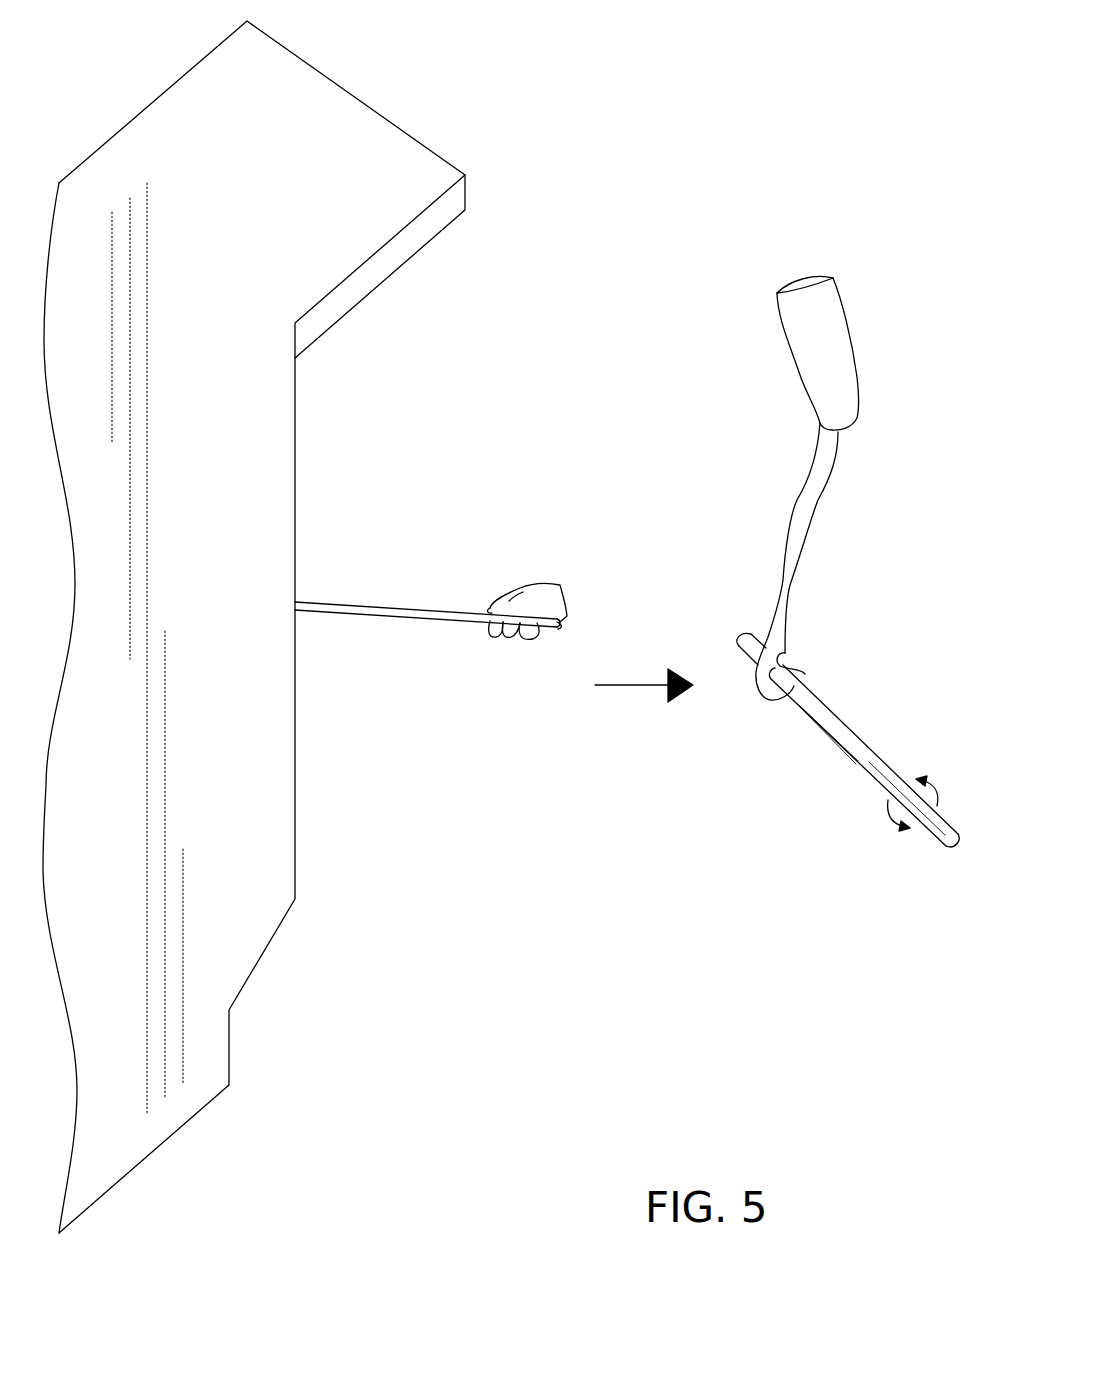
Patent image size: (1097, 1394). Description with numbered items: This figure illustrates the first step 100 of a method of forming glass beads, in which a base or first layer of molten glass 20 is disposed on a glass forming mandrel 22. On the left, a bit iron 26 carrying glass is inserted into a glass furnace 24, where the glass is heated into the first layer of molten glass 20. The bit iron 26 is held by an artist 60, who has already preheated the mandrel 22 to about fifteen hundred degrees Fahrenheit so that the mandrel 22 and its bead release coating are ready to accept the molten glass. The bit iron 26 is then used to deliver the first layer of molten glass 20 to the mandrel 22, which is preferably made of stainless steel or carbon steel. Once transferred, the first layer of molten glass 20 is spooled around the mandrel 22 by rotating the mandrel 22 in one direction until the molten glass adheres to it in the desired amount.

The first step 100 is at (472, 84).
The glass furnace 24 is at (145, 135).
The bit iron 26 is at (397, 608).
The artist 60 is at (527, 588).
The first layer of molten glass 20 is at (795, 518).
The glass forming mandrel 22 is at (850, 738).